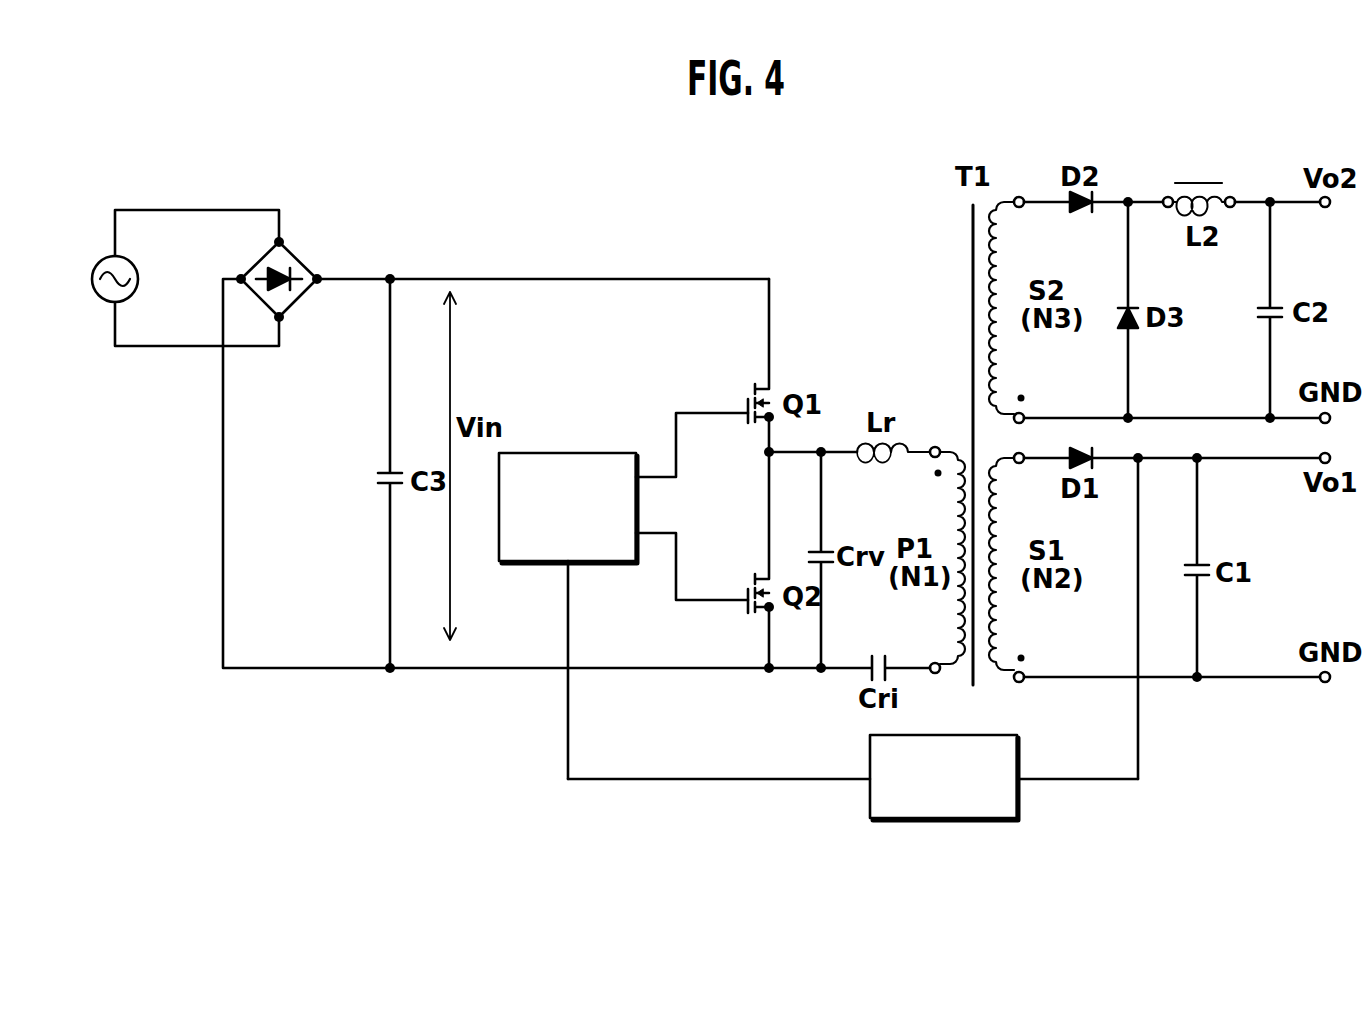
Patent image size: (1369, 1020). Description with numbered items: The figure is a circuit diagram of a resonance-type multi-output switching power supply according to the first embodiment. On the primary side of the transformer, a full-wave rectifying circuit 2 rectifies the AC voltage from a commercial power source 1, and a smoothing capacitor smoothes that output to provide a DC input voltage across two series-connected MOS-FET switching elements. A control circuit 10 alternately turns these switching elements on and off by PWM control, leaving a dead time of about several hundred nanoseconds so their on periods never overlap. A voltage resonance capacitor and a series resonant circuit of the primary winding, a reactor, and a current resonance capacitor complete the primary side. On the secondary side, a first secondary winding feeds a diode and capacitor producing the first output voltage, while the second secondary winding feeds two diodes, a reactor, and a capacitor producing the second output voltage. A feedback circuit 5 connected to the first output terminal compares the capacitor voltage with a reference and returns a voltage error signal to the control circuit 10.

The commercial power source 1 is at (92, 279).
The full-wave rectifying circuit 2 is at (298, 260).
The control circuit 10 is at (566, 453).
The feedback circuit 5 is at (1019, 795).